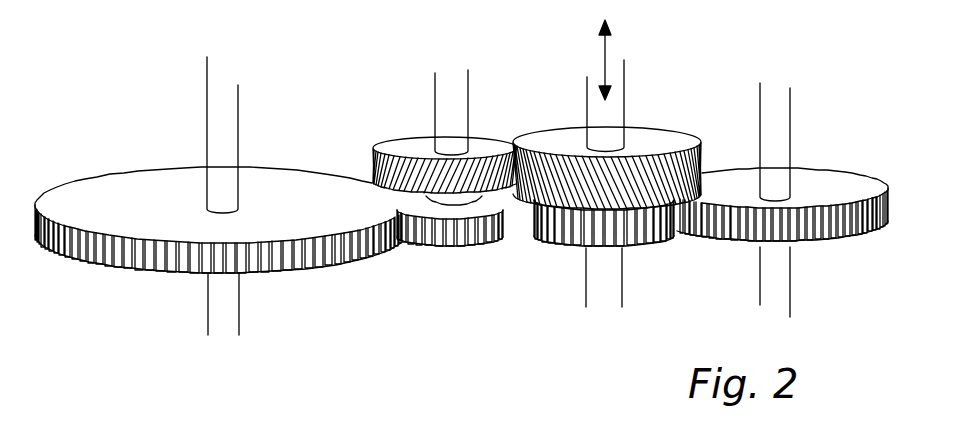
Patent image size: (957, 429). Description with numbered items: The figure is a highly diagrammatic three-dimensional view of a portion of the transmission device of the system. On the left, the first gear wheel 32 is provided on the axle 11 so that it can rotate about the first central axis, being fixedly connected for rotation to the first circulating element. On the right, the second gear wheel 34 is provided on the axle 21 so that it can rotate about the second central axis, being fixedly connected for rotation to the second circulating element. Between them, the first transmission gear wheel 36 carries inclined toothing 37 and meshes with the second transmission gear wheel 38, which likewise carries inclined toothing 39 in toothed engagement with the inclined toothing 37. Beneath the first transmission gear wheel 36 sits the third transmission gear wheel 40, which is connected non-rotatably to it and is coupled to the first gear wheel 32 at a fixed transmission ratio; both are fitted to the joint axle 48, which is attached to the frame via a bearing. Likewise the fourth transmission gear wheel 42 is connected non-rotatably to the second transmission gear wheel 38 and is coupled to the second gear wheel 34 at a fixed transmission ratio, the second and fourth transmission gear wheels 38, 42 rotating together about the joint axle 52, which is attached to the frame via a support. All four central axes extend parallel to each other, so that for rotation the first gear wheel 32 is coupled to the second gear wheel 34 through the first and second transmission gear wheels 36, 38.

The axle 11 is at (230, 112).
The axle 21 is at (790, 118).
The first gear wheel 32 is at (308, 214).
The second gear wheel 34 is at (836, 186).
The first transmission gear wheel 36 is at (436, 138).
The inclined toothing 37 is at (376, 158).
The second transmission gear wheel 38 is at (626, 138).
The inclined toothing 39 is at (703, 157).
The third transmission gear wheel 40 is at (477, 243).
The fourth transmission gear wheel 42 is at (557, 246).
The joint axle 48 is at (436, 98).
The joint axle 52 is at (619, 283).